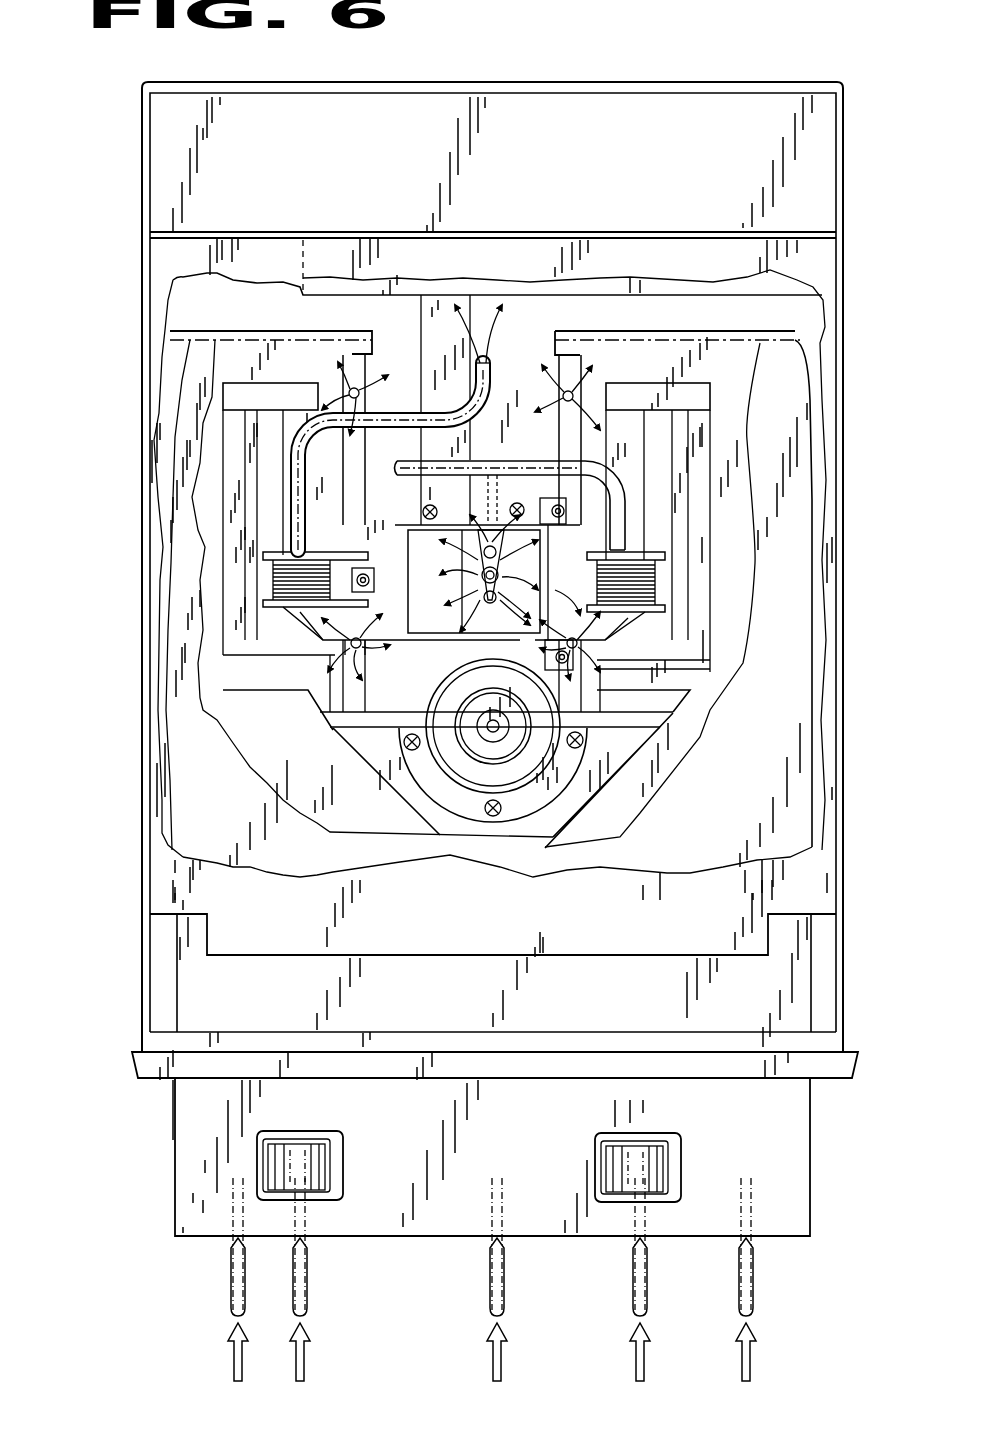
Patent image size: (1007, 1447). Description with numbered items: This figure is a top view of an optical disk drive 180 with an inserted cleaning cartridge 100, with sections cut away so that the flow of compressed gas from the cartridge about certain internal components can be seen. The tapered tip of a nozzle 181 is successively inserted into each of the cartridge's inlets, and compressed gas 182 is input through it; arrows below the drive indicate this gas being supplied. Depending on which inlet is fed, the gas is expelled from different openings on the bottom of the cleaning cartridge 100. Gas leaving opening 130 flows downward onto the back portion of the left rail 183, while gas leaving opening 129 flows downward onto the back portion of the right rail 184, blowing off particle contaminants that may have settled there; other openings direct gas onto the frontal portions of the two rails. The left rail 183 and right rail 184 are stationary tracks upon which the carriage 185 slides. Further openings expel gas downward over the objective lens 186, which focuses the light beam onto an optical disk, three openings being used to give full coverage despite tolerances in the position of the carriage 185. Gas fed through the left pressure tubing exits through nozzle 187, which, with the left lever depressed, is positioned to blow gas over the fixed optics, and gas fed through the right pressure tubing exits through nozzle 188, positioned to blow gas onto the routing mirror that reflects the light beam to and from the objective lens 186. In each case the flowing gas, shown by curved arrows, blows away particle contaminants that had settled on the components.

The cleaning cartridge 100 is at (812, 1174).
The optical disk drive 180 is at (843, 190).
The nozzle 181 is at (229, 1292).
The compressed gas 182 is at (233, 1362).
The left rail 183 is at (362, 505).
The right rail 184 is at (570, 446).
The carriage 185 is at (352, 551).
The objective lens 186 is at (600, 616).
The nozzle 187 is at (482, 365).
The nozzle 188 is at (490, 510).
The opening 129 is at (563, 396).
The opening 130 is at (358, 388).